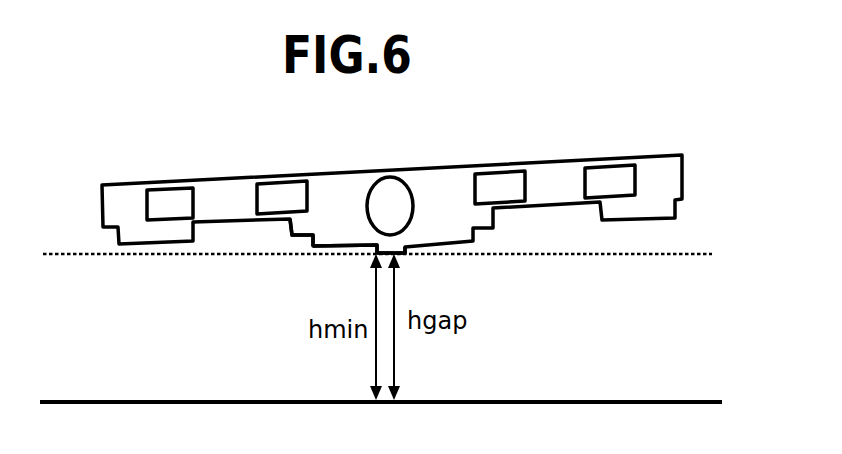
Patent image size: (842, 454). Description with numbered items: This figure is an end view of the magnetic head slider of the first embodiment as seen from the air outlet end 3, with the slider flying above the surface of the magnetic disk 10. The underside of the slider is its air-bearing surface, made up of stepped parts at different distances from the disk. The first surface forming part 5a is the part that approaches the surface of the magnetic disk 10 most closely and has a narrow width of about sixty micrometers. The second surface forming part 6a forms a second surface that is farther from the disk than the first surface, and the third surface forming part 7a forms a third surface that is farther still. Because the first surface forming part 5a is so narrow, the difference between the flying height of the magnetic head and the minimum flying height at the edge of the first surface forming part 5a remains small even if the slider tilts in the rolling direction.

The air outlet end 3 is at (457, 207).
The first surface forming part 5a is at (397, 255).
The second surface forming part 6a is at (347, 247).
The third surface forming part 7a is at (298, 238).
The magnetic disk 10 is at (637, 401).